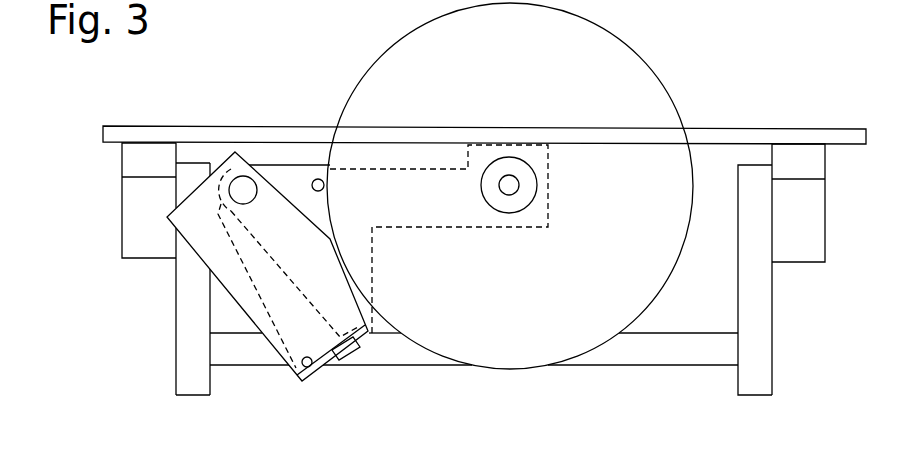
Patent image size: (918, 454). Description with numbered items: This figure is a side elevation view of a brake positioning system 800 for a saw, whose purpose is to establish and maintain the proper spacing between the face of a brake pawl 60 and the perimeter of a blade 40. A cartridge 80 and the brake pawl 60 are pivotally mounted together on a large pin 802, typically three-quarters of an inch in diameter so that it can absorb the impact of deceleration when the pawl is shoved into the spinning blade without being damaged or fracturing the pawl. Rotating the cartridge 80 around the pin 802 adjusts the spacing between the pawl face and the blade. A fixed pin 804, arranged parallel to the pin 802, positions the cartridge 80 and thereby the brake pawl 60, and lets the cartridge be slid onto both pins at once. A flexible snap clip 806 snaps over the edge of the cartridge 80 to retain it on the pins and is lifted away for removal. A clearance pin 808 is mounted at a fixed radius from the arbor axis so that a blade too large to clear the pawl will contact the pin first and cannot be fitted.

The blade 40 is at (498, 301).
The brake pawl 60 is at (292, 286).
The cartridge 80 is at (175, 209).
The brake positioning system 800 is at (186, 336).
The large pin 802 is at (255, 182).
The fixed pin 804 is at (302, 367).
The flexible snap clip 806 is at (350, 354).
The clearance pin 808 is at (324, 179).